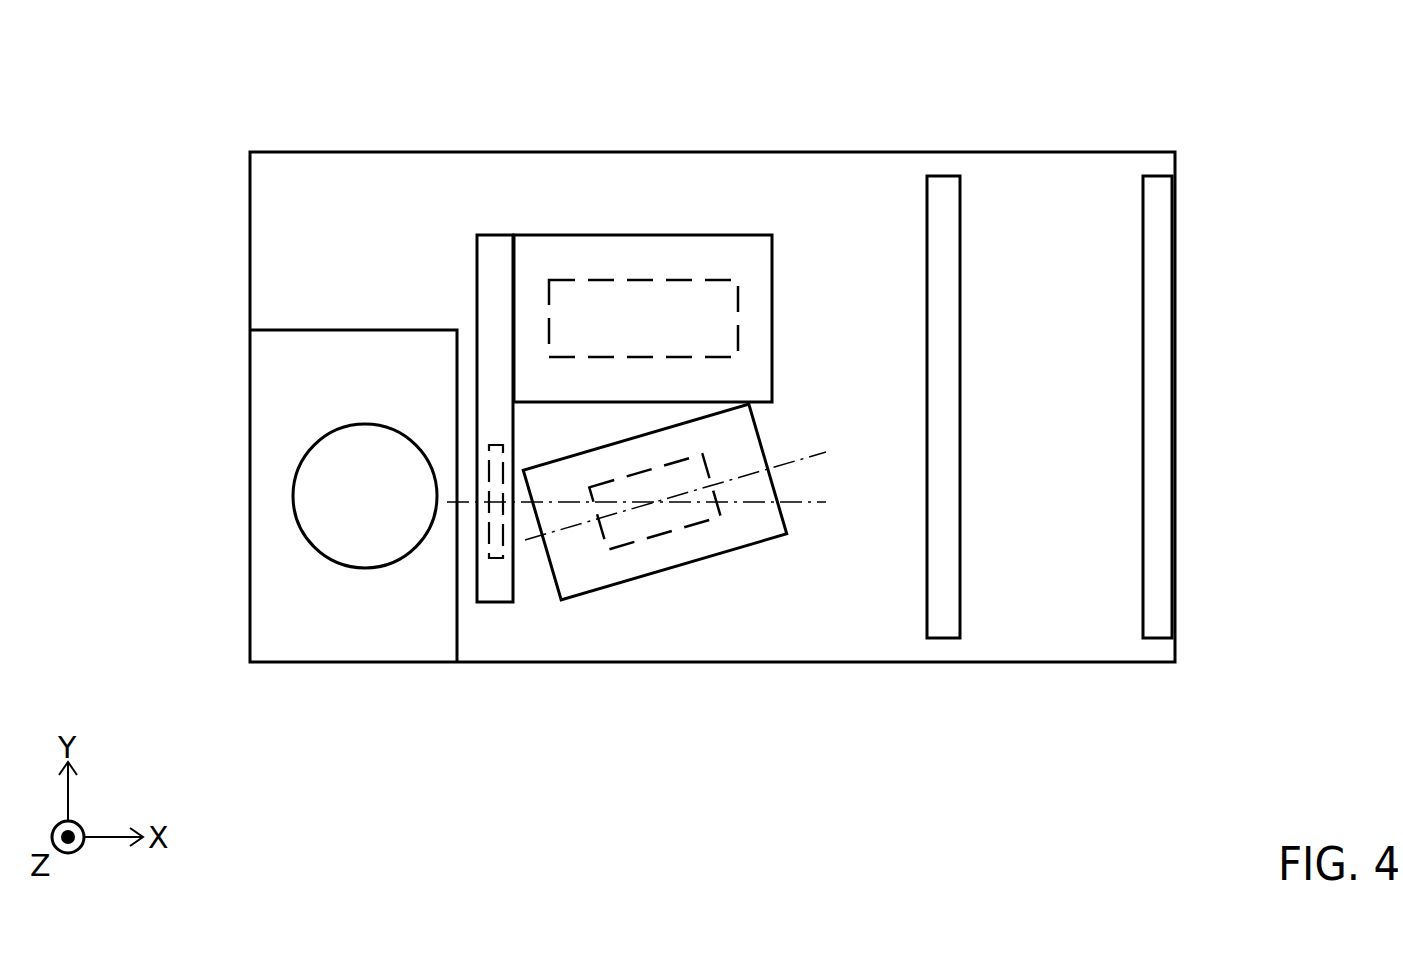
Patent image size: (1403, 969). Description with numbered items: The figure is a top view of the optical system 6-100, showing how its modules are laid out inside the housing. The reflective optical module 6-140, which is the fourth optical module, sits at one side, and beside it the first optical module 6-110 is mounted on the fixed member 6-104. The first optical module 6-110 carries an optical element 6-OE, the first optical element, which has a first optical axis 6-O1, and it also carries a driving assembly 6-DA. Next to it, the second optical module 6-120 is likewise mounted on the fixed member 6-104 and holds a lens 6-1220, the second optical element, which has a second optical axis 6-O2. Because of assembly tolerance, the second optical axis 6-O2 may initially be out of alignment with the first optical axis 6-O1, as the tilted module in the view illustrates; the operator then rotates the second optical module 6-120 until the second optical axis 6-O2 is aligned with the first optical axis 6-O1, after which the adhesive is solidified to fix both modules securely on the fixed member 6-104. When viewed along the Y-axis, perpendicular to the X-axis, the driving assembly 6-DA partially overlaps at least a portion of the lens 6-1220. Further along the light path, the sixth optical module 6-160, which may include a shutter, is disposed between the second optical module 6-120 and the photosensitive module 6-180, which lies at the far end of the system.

The optical system 6-100 is at (200, 49).
The first optical module 6-110 is at (521, 233).
The driving assembly 6-DA is at (637, 310).
The fixed member 6-104 is at (822, 207).
The sixth optical module 6-160 is at (945, 176).
The photosensitive module 6-180 is at (1160, 176).
The reflective optical module 6-140 is at (313, 378).
The second optical axis 6-O2 is at (709, 487).
The first optical axis 6-O1 is at (670, 501).
The optical element 6-OE is at (495, 538).
The second optical module 6-120 is at (572, 600).
The lens 6-1220 is at (683, 522).